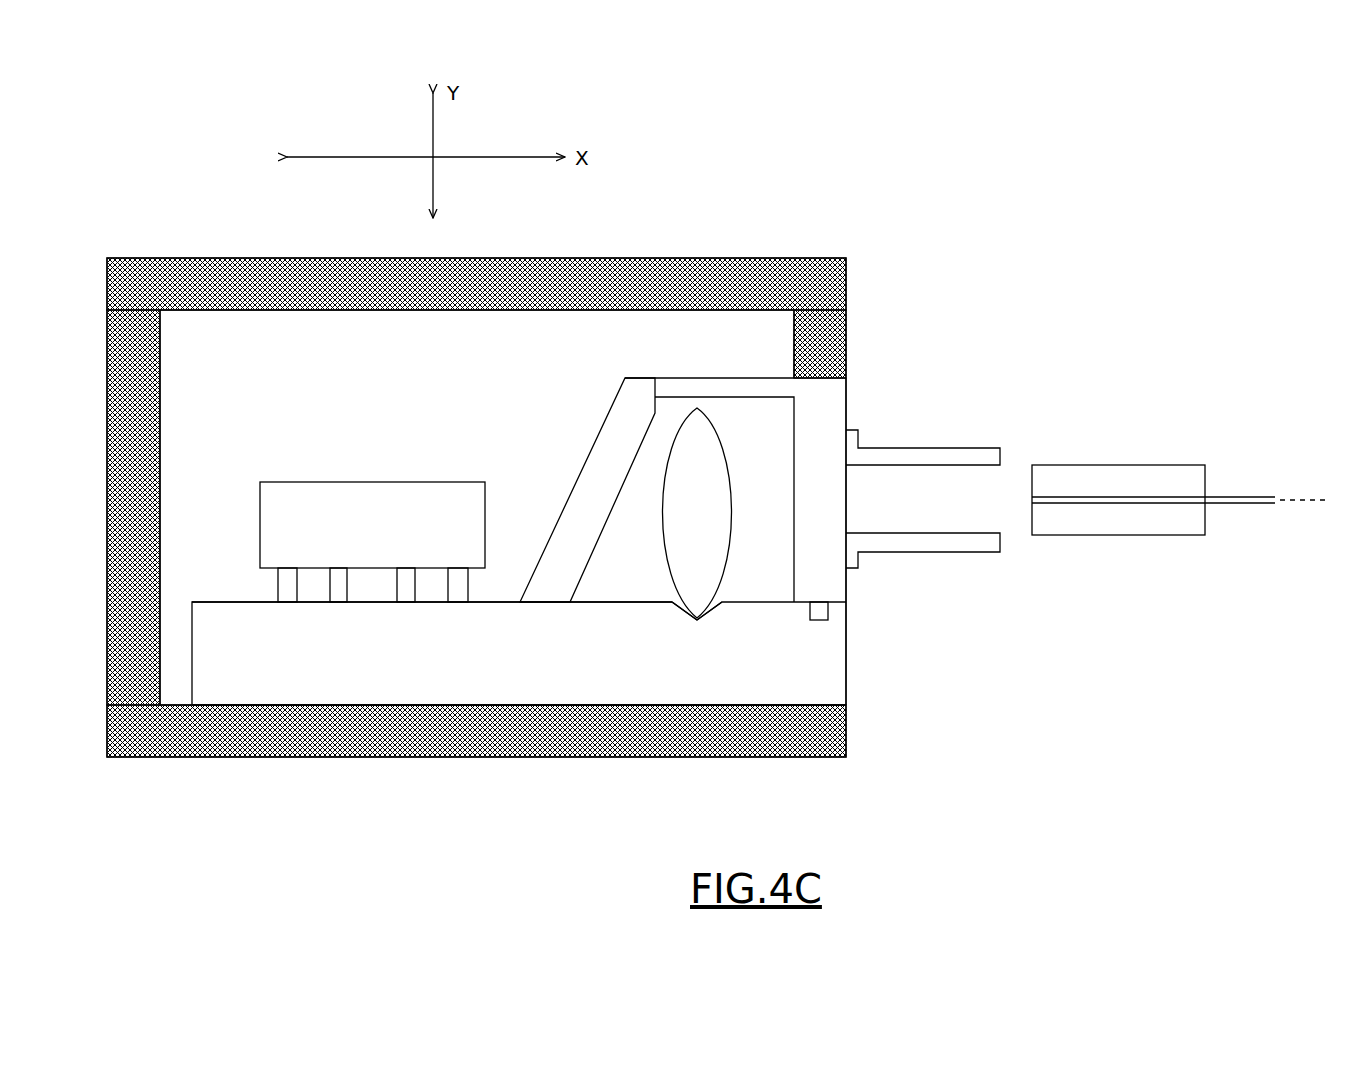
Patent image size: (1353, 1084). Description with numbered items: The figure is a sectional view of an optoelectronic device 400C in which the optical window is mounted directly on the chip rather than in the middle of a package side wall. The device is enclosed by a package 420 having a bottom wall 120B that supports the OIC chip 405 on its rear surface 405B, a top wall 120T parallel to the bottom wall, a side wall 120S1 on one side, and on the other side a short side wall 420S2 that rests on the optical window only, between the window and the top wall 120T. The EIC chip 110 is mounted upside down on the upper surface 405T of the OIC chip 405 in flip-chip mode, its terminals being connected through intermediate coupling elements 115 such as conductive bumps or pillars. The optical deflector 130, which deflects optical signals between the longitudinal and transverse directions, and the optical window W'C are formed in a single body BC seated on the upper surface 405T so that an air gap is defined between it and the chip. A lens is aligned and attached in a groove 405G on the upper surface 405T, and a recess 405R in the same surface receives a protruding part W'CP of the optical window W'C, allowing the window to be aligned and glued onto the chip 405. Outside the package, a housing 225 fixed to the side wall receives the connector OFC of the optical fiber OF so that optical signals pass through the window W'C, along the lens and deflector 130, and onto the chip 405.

The optoelectronic device 400C is at (1143, 175).
The package 420 is at (748, 257).
The top wall 120T is at (846, 282).
The side wall 420S2 is at (846, 360).
The side wall 120S1 is at (160, 432).
The bottom wall 120B is at (846, 750).
The OIC chip 405 is at (519, 653).
The upper surface 405T is at (220, 607).
The rear surface 405B is at (285, 702).
The groove 405G is at (697, 622).
The recess 405R is at (820, 621).
The EIC chip 110 is at (315, 482).
The intermediate coupling elements 115 is at (275, 597).
The optical deflector 130 is at (593, 447).
The body BC is at (627, 377).
The optical window W'C is at (724, 467).
The protruding part W'CP is at (925, 541).
The housing 225 is at (925, 447).
The connector OFC is at (1085, 465).
The optical fiber OF is at (1250, 503).